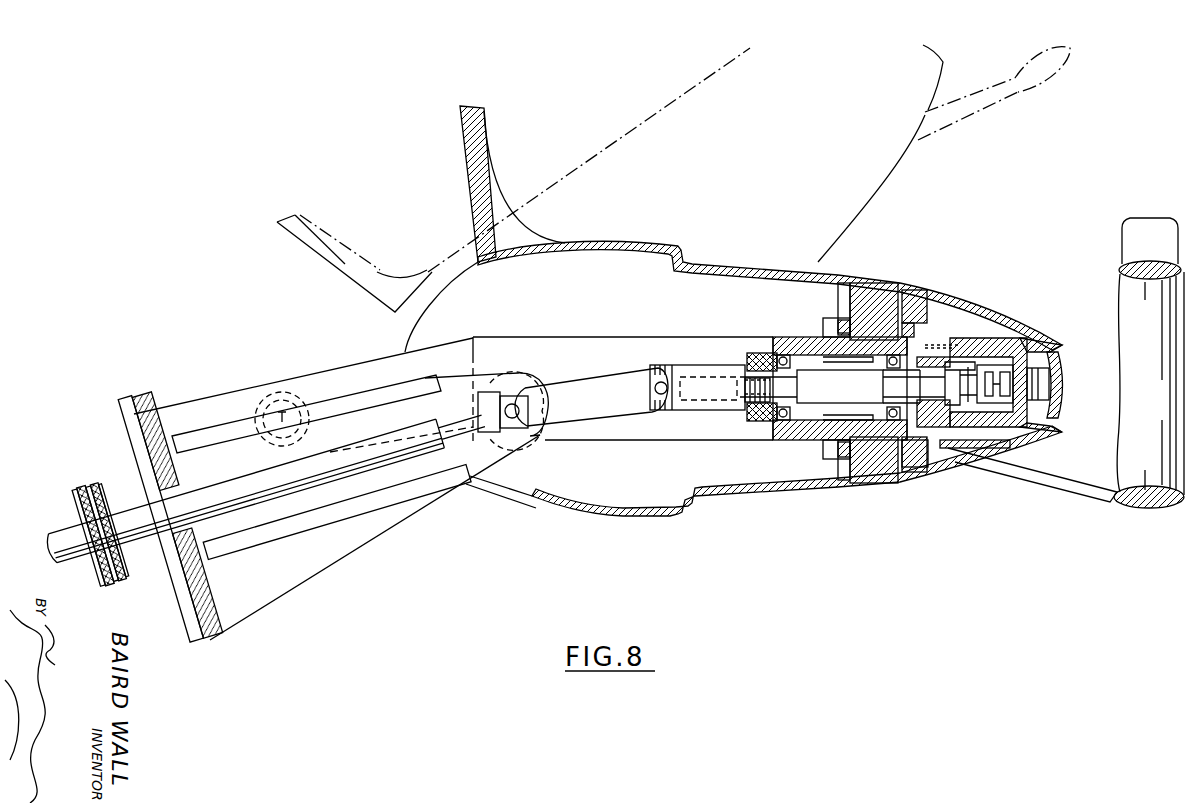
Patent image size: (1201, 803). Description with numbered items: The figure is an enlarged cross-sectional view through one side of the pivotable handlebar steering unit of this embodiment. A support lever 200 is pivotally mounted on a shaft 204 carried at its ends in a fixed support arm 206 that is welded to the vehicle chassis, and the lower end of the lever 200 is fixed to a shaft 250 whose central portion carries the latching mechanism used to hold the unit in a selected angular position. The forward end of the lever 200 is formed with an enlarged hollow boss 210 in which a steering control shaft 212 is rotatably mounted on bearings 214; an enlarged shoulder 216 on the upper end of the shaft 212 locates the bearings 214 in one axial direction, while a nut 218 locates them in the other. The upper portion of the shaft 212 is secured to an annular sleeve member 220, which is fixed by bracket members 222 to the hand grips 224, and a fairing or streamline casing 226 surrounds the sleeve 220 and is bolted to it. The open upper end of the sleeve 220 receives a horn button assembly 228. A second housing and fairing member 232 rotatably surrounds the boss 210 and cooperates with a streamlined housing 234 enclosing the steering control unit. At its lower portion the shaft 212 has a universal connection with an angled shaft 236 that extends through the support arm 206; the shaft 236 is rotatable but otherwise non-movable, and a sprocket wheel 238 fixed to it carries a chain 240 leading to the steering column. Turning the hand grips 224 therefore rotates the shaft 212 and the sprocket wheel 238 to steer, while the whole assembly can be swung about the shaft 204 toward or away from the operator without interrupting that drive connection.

The support levers 200 is at (508, 342).
The shaft 204 is at (518, 370).
The fixed support arms 206 is at (285, 594).
The hollow boss 210 is at (793, 322).
The steering control shaft 212 is at (842, 386).
The bearings 214 is at (770, 343).
The enlarged shoulder 216 is at (947, 455).
The nut 218 is at (750, 364).
The annular sleeve member 220 is at (918, 318).
The bracket members 222 is at (1042, 466).
The hand grips 224 is at (1125, 420).
The fairing or streamline casing 226 is at (940, 477).
The horn button assembly 228 is at (1077, 363).
The second housing and fairing member 232 is at (874, 485).
The streamlined housing 234 is at (628, 518).
The angled shaft 236 is at (270, 484).
The sprocket wheel 238 is at (108, 488).
The chain 240 is at (80, 486).
The shaft 250 is at (283, 396).